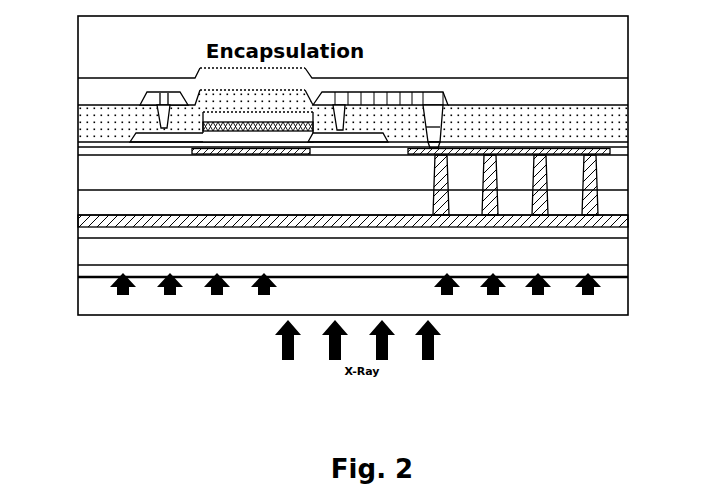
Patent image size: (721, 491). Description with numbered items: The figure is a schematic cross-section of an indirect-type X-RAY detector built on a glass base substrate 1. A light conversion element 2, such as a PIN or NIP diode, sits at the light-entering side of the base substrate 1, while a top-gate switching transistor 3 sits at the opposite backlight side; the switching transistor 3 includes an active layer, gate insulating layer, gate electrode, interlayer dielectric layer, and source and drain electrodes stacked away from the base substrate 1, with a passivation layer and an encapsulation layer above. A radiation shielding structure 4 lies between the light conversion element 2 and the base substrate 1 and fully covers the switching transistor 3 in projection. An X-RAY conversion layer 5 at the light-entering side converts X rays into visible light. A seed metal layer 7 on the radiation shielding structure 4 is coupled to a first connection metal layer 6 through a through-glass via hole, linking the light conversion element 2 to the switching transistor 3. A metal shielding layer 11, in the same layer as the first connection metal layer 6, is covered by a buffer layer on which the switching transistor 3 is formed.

The base substrate 1 is at (629, 167).
The light conversion element 2 is at (71, 228).
The switching transistor 3 is at (71, 80).
The radiation shielding structure 4 is at (629, 203).
The X-RAY conversion layer 5 is at (631, 297).
The first connection metal layer 6 is at (612, 148).
The seed metal layer 7 is at (631, 221).
The metal shielding layer 11 is at (78, 147).